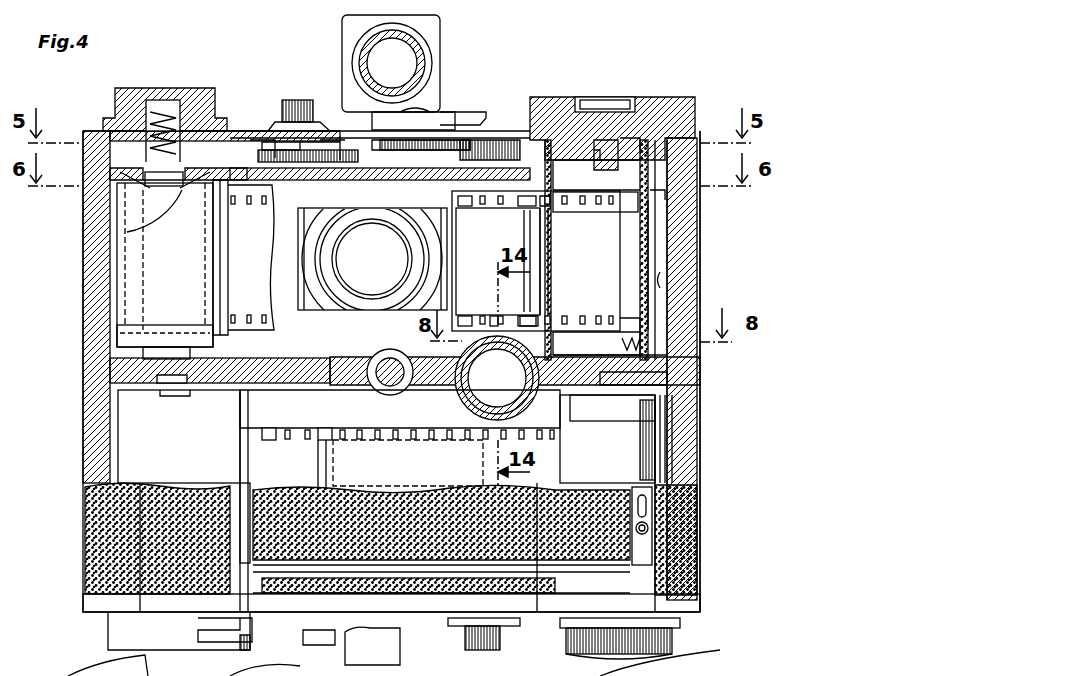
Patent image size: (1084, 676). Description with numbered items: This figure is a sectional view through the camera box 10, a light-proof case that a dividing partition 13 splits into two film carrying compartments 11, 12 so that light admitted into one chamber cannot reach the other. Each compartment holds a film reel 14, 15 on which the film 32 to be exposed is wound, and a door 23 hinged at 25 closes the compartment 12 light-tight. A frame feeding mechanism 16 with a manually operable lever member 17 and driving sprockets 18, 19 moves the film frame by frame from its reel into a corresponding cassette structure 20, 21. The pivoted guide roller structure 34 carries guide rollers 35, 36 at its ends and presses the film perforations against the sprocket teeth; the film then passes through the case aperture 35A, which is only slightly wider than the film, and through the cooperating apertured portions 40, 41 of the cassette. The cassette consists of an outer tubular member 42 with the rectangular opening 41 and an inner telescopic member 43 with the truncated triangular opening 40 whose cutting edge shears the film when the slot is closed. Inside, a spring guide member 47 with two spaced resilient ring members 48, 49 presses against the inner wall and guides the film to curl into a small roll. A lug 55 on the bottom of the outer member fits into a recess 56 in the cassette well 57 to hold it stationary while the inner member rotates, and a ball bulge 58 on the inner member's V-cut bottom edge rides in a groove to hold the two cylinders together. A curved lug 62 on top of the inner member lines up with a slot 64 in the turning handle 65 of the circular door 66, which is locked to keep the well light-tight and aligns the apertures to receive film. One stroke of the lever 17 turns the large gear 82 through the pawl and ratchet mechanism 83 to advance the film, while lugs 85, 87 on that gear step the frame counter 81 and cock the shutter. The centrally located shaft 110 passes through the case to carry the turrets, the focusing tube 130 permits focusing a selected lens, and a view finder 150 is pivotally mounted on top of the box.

The camera box 10 is at (83, 541).
The film carrying compartment 11 is at (290, 195).
The film carrying compartment 12 is at (258, 405).
The dividing partition 13 is at (312, 368).
The film reel 14 is at (128, 212).
The film reel 15 is at (130, 434).
The frame feeding mechanism 16 is at (455, 176).
The manually operable lever member 17 is at (470, 125).
The driving sprocket 18 is at (520, 207).
The driving sprocket 19 is at (492, 317).
The cassette structure 20 is at (660, 232).
The cassette structure 21 is at (660, 456).
The door 23 is at (418, 498).
The hinge 25 is at (245, 500).
The film 32 is at (258, 305).
The pivoted guide roller structure 34 is at (527, 282).
The guide roller 35 is at (469, 211).
The case aperture 35A is at (540, 322).
The guide roller 36 is at (545, 206).
The truncated triangular opening 40 is at (557, 193).
The rectangular opening 41 is at (562, 338).
The outer tubular member 42 is at (657, 262).
The inner telescopic member 43 is at (655, 262).
The spring guide member 47 is at (628, 218).
The resilient modified ring member 48 is at (645, 204).
The resilient modified ring member 49 is at (633, 318).
The lug 55 is at (580, 400).
The recess 56 is at (630, 380).
The cassette well 57 is at (660, 280).
The ball bulge 58 is at (640, 352).
The curved lug 62 is at (602, 165).
The slot 64 is at (608, 138).
The turning handle 65 is at (605, 97).
The circular door 66 is at (540, 100).
The frame counter 81 is at (330, 100).
The large gear 82 is at (420, 178).
The pawl and ratchet mechanism 83 is at (420, 150).
The lug 85 is at (470, 150).
The lug 87 is at (365, 178).
The centrally located shaft 110 is at (385, 378).
The focusing tube 130 is at (495, 385).
The view finder 150 is at (432, 48).